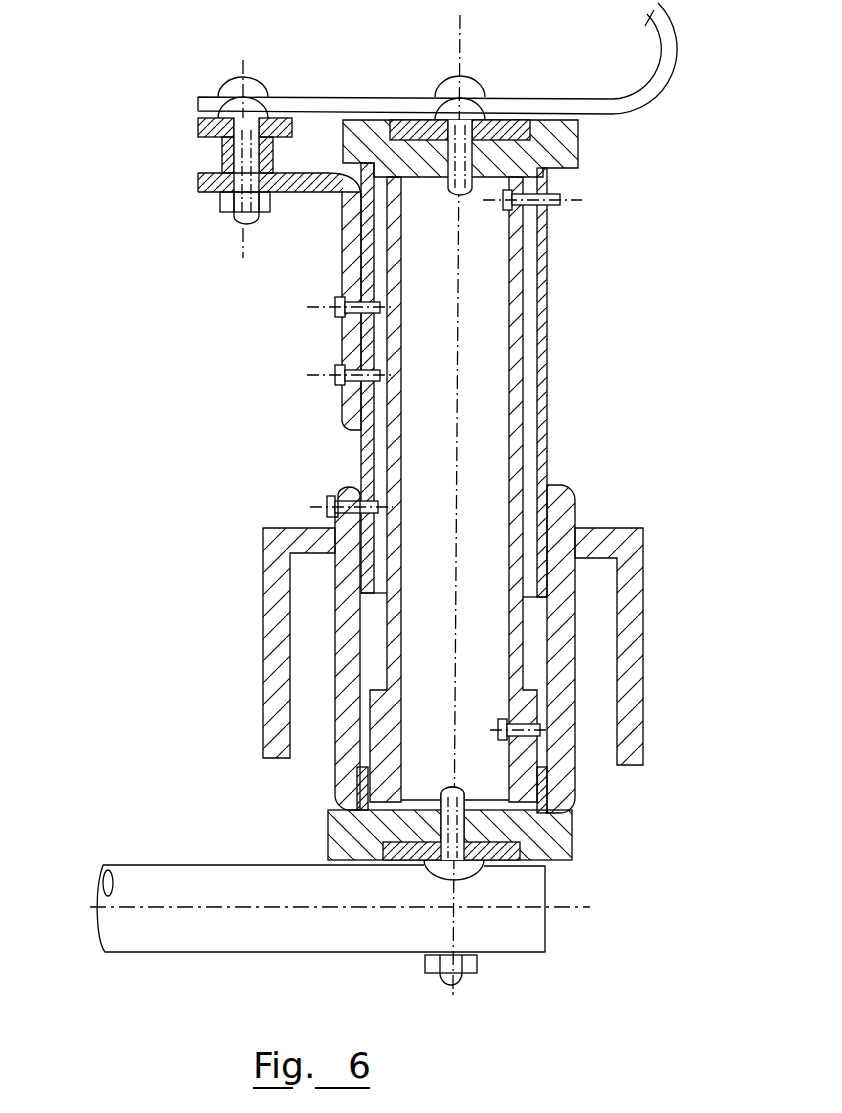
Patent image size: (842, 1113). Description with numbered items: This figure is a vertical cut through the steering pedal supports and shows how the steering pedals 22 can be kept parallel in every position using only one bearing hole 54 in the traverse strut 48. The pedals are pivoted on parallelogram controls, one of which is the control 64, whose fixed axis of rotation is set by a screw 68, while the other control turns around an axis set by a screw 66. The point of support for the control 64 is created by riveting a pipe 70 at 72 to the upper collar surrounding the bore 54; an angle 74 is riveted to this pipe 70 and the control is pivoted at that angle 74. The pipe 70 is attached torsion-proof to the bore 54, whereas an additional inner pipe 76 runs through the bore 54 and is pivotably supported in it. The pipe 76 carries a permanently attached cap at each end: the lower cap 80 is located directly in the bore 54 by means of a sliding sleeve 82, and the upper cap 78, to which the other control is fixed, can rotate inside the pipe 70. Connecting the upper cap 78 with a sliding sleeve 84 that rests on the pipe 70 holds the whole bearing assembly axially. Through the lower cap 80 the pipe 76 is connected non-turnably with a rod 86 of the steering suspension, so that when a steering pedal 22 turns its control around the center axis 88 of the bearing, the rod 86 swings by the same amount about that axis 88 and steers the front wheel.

The steering pedal 22 is at (669, 70).
The traverse strut 48 is at (278, 560).
The bearing hole 54 is at (373, 634).
The parallelogram control 64 is at (203, 127).
The screw 66 is at (471, 113).
The screw 68 is at (235, 222).
The pipe 70 is at (365, 451).
The rivet point 72 is at (328, 497).
The angle 74 is at (348, 260).
The pipe 76 is at (517, 388).
The upper cap 78 is at (567, 143).
The lower cap 80 is at (556, 850).
The sliding sleeve 82 is at (543, 789).
The sliding sleeve 84 is at (367, 196).
The rod 86 is at (310, 934).
The axis 88 is at (460, 308).